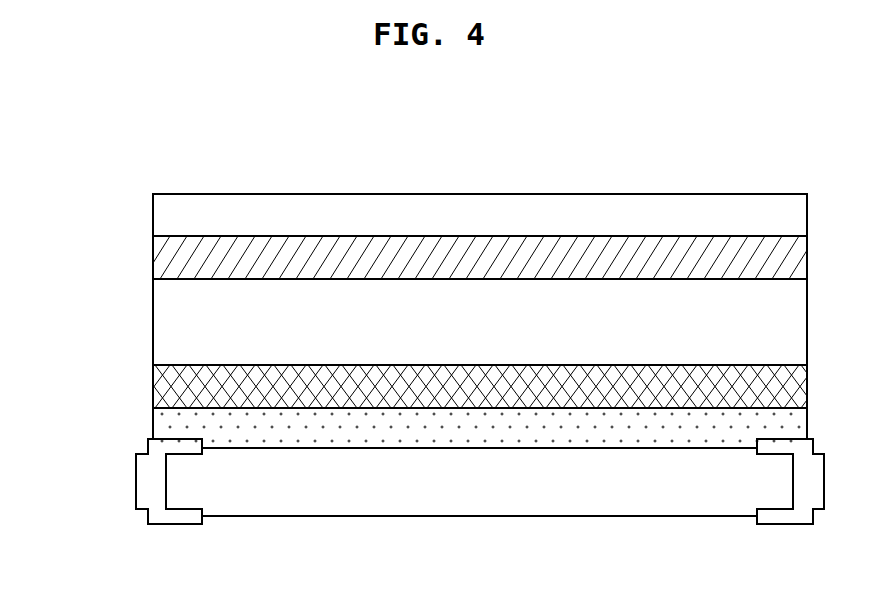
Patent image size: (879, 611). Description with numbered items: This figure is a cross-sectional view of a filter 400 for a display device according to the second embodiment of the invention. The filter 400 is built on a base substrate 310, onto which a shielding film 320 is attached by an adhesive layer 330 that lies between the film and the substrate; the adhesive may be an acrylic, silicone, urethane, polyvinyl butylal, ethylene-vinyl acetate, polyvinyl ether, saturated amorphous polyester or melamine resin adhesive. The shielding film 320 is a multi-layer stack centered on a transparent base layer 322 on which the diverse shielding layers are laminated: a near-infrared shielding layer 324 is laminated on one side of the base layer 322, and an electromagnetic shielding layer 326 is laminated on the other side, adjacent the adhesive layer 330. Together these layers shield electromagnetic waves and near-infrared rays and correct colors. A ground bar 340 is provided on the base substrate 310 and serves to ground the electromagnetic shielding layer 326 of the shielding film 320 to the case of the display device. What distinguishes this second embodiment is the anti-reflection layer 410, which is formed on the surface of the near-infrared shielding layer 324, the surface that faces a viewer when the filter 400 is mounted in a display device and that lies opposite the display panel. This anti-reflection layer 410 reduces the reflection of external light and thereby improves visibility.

The filter 400 is at (660, 183).
The anti-reflection layer 410 is at (164, 212).
The shielding film 320 is at (73, 241).
The near-infrared shielding layer 324 is at (164, 255).
The transparent base layer 322 is at (164, 318).
The electromagnetic shielding layer 326 is at (164, 390).
The adhesive layer 330 is at (164, 422).
The base substrate 310 is at (287, 502).
The ground bar 340 is at (172, 515).